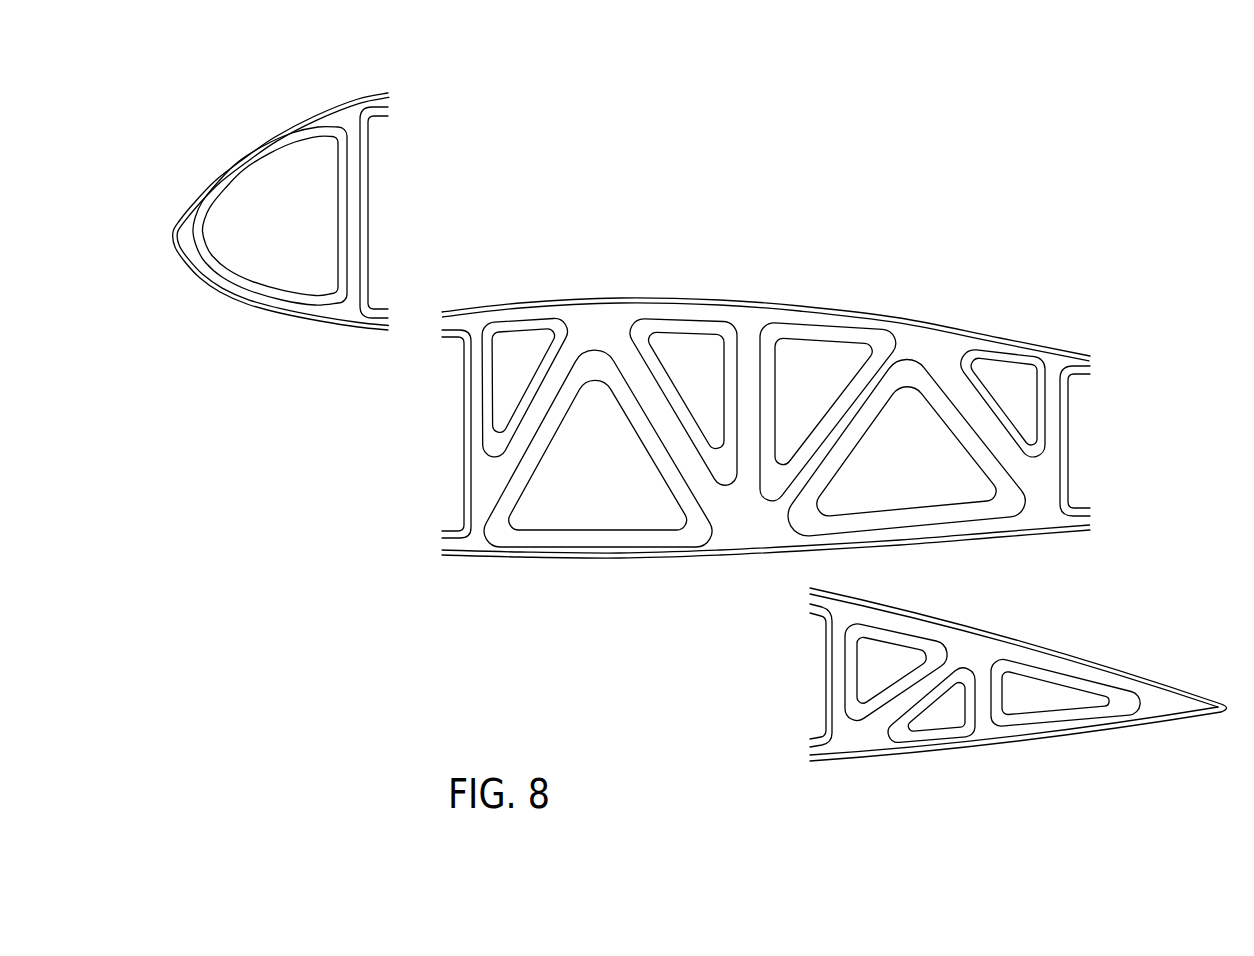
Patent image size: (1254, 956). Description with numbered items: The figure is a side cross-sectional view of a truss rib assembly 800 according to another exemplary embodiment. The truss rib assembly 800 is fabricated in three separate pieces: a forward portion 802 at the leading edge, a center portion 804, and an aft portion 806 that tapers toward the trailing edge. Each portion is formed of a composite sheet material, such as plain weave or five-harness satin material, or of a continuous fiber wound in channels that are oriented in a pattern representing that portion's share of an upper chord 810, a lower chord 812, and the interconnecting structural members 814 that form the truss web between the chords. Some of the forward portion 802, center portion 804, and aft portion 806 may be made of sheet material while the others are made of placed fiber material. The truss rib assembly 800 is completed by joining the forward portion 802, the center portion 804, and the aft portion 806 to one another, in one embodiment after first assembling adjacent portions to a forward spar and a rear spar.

The truss rib assembly 800 is at (1016, 110).
The forward portion 802 is at (217, 311).
The center portion 804 is at (626, 604).
The aft portion 806 is at (1095, 643).
The upper chord 810 is at (357, 110).
The lower chord 812 is at (350, 312).
The interconnecting structural members 814 is at (352, 203).